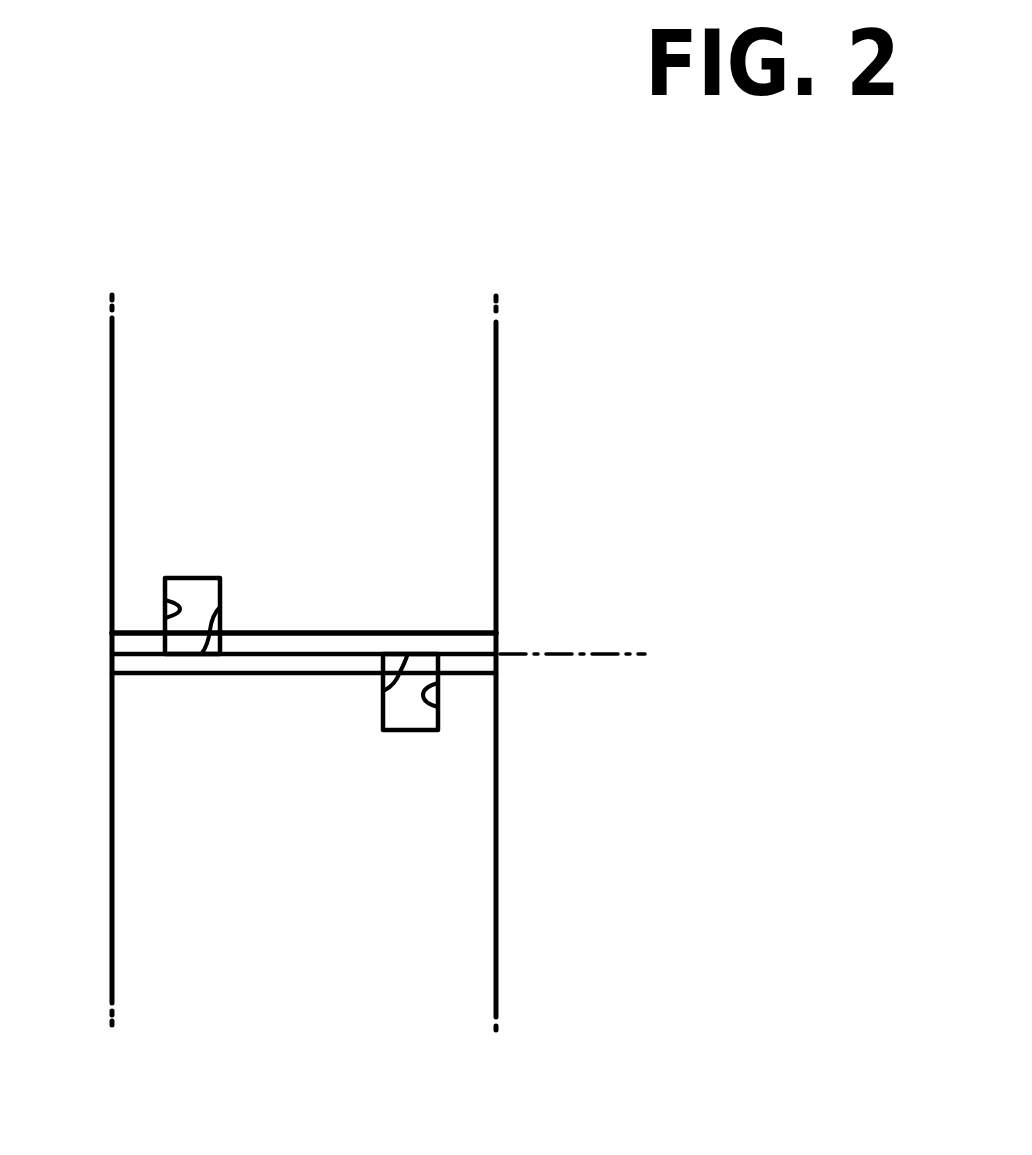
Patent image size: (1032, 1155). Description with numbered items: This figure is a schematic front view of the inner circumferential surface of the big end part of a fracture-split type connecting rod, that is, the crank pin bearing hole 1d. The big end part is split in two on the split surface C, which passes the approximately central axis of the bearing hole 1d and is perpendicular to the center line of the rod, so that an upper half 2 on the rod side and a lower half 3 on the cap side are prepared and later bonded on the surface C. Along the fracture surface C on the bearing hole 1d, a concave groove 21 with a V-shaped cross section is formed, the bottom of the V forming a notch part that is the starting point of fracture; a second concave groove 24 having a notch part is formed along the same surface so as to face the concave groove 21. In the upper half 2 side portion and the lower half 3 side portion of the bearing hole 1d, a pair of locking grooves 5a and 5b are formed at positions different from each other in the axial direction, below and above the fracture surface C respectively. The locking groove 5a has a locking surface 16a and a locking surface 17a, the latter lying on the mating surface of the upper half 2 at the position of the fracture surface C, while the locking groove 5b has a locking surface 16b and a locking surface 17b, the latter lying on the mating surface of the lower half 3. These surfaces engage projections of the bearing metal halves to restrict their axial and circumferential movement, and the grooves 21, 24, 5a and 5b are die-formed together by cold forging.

The upper half 2 is at (153, 365).
The lower half 3 is at (443, 925).
The crank pin bearing hole 1d is at (362, 358).
The concave groove 21 is at (304, 710).
The concave groove 24 is at (215, 676).
The split surface C is at (592, 656).
The locking groove 5a is at (413, 730).
The locking groove 5b is at (205, 578).
The locking surface 16a is at (438, 705).
The locking surface 16b is at (165, 600).
The locking surface 17a is at (385, 690).
The locking surface 17b is at (220, 607).